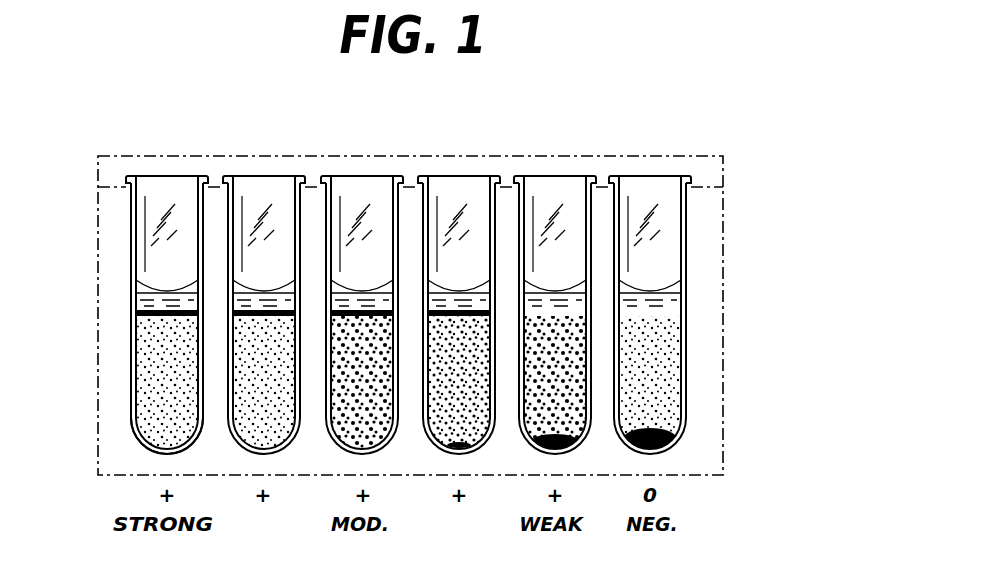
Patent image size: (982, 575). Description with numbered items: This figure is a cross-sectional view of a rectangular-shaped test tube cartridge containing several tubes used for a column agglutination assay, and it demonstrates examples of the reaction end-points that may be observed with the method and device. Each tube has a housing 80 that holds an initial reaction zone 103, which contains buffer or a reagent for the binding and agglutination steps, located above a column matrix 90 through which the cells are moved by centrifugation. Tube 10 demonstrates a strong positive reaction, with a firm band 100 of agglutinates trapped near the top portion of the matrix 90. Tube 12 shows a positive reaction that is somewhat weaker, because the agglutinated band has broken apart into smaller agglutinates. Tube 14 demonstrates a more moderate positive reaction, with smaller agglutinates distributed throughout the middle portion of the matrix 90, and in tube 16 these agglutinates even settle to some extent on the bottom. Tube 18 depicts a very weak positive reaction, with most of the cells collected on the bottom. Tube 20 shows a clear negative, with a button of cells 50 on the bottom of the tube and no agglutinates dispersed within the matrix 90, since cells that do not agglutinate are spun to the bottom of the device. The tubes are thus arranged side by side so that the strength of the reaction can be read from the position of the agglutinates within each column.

The tube 10 is at (407, 286).
The tube 12 is at (270, 226).
The tube 14 is at (375, 226).
The tube 16 is at (465, 226).
The tube 18 is at (540, 226).
The tube 20 is at (698, 280).
The button of cells 50 is at (675, 438).
The housing 80 is at (130, 377).
The matrix 90 is at (155, 422).
The band of agglutinated reactants 100 is at (133, 313).
The initial reaction zone 103 is at (555, 298).